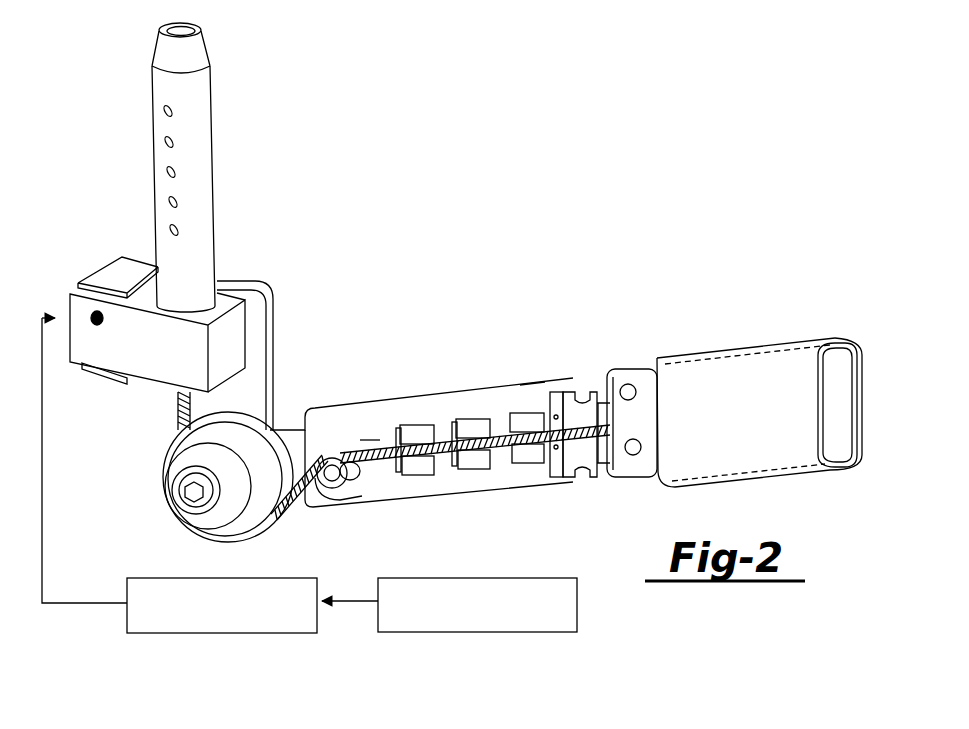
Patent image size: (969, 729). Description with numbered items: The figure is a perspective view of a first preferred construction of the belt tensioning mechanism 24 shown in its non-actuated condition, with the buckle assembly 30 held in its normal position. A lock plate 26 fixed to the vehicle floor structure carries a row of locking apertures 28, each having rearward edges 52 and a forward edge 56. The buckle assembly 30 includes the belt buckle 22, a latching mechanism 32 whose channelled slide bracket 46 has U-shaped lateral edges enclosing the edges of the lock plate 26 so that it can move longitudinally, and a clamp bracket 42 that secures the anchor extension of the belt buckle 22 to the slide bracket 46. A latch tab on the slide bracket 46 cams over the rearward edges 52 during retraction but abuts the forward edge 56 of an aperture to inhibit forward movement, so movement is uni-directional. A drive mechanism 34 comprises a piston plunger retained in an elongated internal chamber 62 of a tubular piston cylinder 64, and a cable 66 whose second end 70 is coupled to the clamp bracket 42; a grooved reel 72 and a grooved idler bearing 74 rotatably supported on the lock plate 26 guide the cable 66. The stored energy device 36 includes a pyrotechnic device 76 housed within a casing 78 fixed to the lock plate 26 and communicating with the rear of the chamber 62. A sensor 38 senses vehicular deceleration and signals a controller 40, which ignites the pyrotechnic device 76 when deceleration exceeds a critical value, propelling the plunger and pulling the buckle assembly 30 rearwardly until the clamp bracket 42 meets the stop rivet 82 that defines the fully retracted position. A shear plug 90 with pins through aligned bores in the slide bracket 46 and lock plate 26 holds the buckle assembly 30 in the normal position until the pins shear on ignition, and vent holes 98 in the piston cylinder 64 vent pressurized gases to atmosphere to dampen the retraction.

The belt buckle 22 is at (728, 447).
The belt tensioning mechanism 24 is at (698, 335).
The lock plate 26 is at (460, 408).
The locking apertures 28 is at (472, 470).
The buckle assembly 30 is at (773, 343).
The latching mechanism 32 is at (607, 370).
The drive mechanism 34 is at (168, 392).
The stored energy device 36 is at (147, 348).
The sensor 38 is at (467, 575).
The controller 40 is at (130, 577).
The clamp bracket 42 is at (643, 455).
The slide bracket 46 is at (582, 380).
The rearward edges 52 is at (427, 427).
The forward edge 56 is at (423, 425).
The internal chamber 62 is at (190, 26).
The piston cylinder 64 is at (192, 158).
The cable 66 is at (287, 520).
The second end 70 is at (600, 450).
The grooved reel 72 is at (220, 532).
The grooved idler bearing 74 is at (336, 490).
The pyrotechnic device 76 is at (67, 318).
The casing 78 is at (93, 342).
The stop rivet 82 is at (372, 443).
The shear plug 90 is at (532, 390).
The vent holes 98 is at (165, 172).